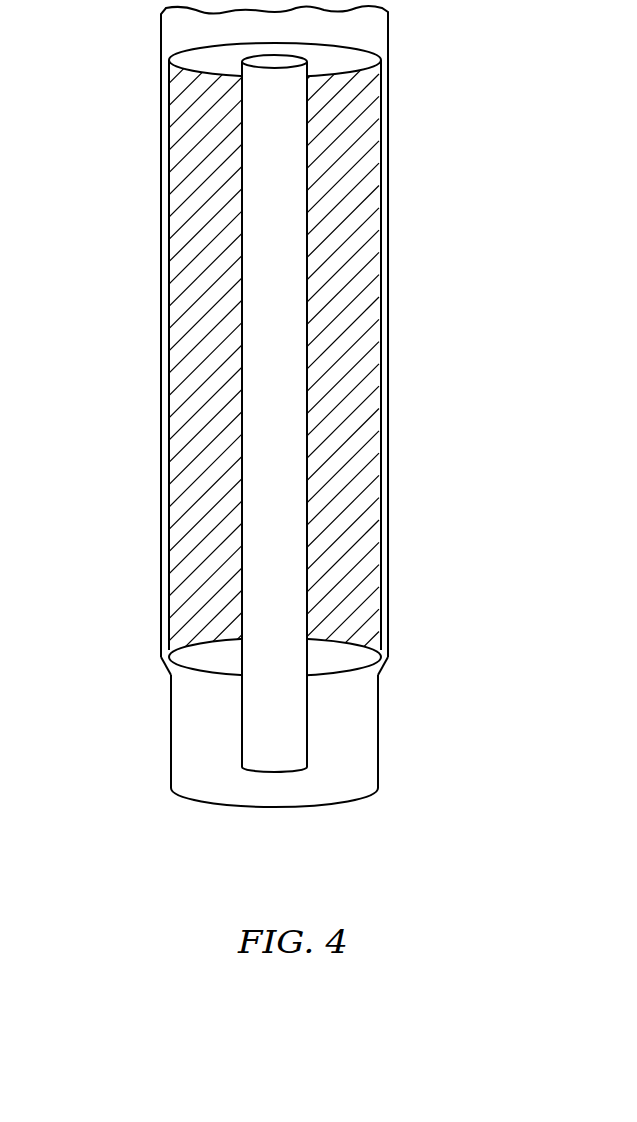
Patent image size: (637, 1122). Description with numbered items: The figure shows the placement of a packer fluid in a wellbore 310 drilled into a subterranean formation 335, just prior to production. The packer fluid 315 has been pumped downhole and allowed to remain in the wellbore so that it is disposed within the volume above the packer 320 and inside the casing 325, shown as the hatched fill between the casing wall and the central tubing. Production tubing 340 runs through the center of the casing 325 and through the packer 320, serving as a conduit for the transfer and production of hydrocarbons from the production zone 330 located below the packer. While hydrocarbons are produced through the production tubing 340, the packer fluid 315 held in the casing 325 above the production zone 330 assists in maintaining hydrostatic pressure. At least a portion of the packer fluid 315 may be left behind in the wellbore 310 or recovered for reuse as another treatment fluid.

The subterranean formation 335 is at (80, 242).
The wellbore 310 is at (388, 191).
The packer fluid 315 is at (360, 412).
The packer 320 is at (350, 657).
The casing 325 is at (381, 462).
The production zone 330 is at (355, 722).
The production tubing 340 is at (307, 161).